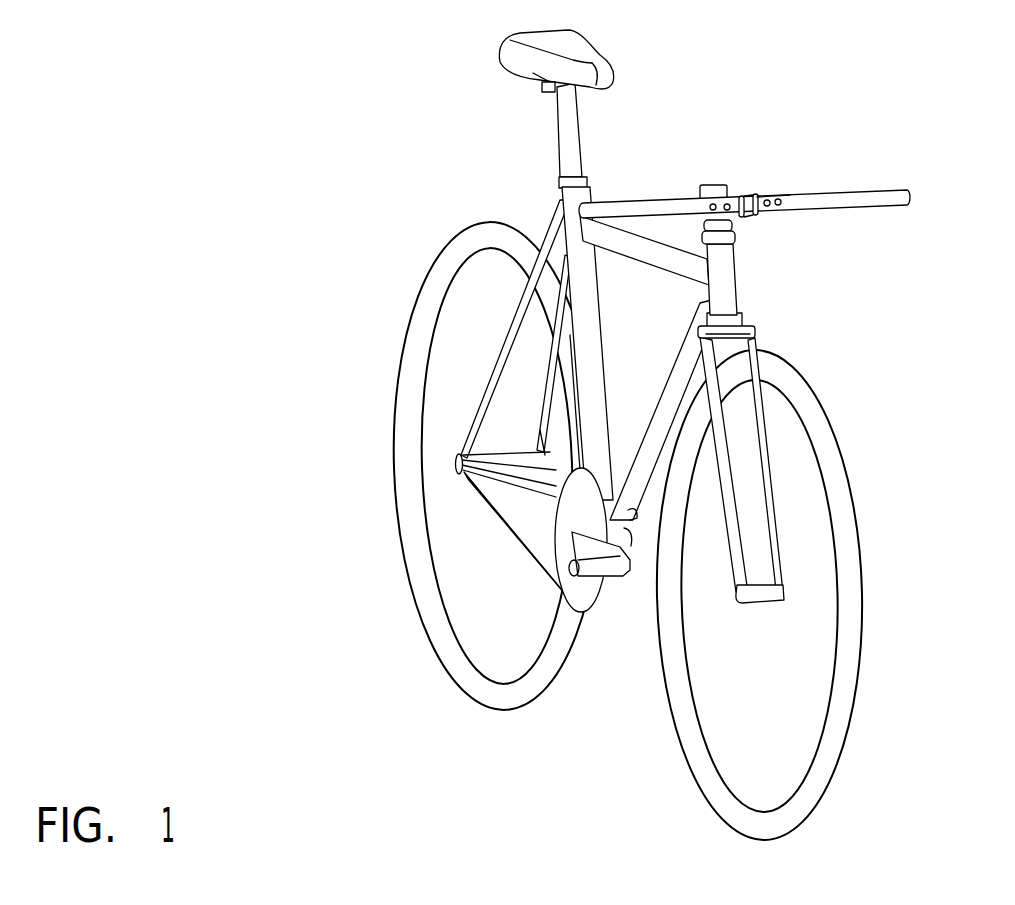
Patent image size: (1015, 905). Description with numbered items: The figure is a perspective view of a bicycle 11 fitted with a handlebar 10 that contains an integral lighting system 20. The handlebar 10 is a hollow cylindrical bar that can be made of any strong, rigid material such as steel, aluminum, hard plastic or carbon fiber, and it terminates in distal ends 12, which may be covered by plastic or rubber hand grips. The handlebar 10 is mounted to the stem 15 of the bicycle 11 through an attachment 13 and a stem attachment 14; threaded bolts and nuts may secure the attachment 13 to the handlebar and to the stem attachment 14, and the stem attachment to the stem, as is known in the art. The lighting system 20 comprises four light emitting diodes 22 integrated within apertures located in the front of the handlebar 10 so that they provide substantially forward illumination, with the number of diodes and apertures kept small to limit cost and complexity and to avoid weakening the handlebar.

The handlebar 10 is at (795, 167).
The bicycle 11 is at (913, 83).
The distal ends 12 is at (890, 188).
The attachment 13 is at (745, 218).
The stem attachment 14 is at (713, 187).
The stem 15 is at (723, 277).
The lighting system 20 is at (792, 227).
The light emitting diodes 22 is at (767, 193).